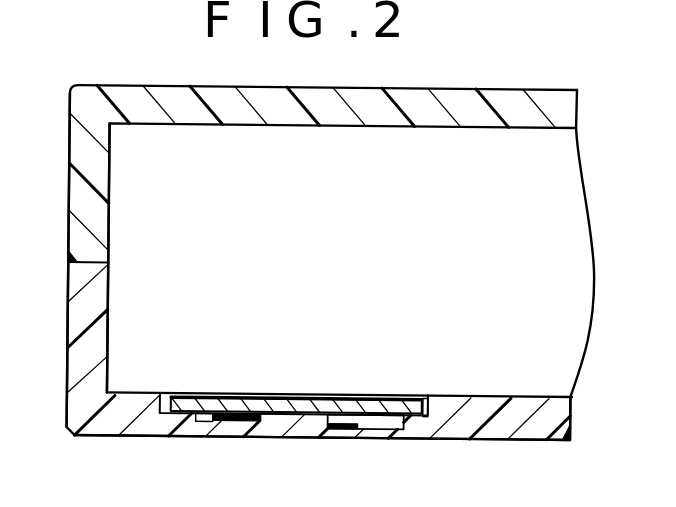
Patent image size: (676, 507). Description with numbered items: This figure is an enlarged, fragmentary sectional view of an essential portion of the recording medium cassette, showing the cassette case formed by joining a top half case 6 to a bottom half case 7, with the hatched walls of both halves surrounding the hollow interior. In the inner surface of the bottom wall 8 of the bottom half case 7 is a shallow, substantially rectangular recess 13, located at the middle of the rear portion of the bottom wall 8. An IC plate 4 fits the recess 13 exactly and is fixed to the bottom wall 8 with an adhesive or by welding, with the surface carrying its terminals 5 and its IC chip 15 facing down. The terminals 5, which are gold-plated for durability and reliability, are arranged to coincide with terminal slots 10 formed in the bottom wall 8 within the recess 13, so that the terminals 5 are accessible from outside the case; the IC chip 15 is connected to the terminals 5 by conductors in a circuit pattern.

The IC plate 4 is at (324, 397).
The terminals 5 is at (251, 420).
The top half case 6 is at (78, 231).
The bottom half case 7 is at (78, 320).
The bottom wall 8 is at (540, 437).
The terminal slots 10 is at (206, 420).
The recess 13 is at (428, 396).
The IC chip 15 is at (375, 420).